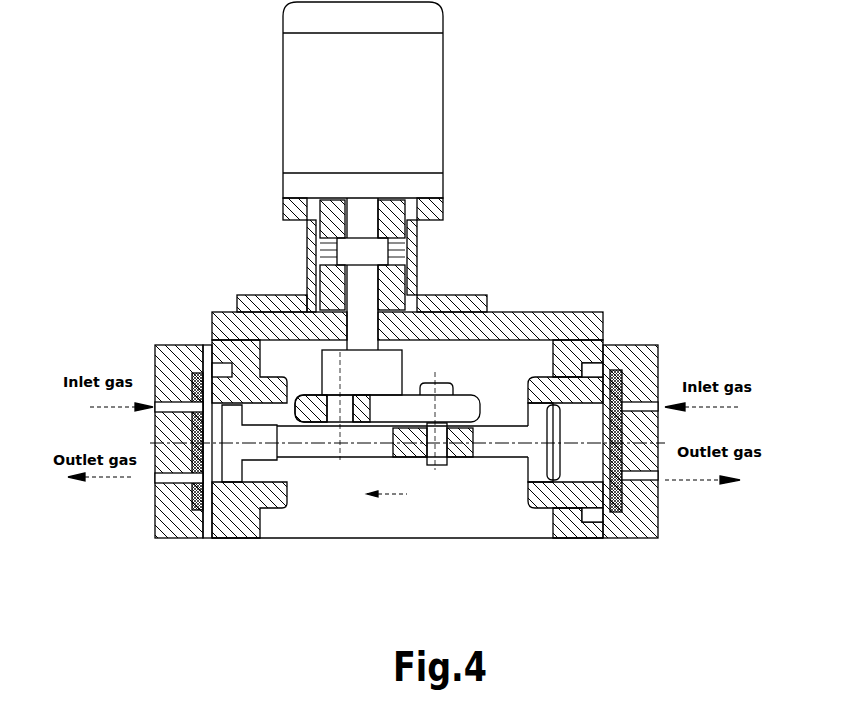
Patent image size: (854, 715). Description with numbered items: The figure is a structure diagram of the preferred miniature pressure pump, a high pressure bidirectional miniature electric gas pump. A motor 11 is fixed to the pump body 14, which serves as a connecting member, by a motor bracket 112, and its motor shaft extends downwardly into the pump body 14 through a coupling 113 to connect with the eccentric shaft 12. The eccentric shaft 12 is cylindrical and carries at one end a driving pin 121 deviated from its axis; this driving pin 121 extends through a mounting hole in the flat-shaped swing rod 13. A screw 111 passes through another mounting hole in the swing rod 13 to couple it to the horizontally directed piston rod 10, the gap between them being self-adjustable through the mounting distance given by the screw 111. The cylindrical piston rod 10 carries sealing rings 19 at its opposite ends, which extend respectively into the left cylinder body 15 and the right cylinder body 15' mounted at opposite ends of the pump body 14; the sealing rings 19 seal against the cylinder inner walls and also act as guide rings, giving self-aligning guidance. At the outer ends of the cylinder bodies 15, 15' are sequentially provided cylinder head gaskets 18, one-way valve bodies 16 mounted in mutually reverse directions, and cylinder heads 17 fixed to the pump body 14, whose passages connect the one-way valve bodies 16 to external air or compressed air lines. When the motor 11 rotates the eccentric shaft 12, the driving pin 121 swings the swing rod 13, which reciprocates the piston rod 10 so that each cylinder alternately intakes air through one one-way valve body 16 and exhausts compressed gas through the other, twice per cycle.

The piston rod 10 is at (300, 442).
The motor 11 is at (348, 178).
The eccentric shaft 12 is at (343, 370).
The swing rod 13 is at (310, 408).
The pump body 14 is at (237, 338).
The left cylinder body 15 is at (163, 318).
The right cylinder body 15' is at (643, 402).
The one-way valve body 16 is at (192, 407).
The cylinder head 17 is at (175, 490).
The cylinder head gasket 18 is at (205, 535).
The sealing ring 19 is at (220, 475).
The screw 111 is at (437, 442).
The motor bracket 112 is at (435, 305).
The coupling 113 is at (392, 280).
The driving pin 121 is at (345, 410).